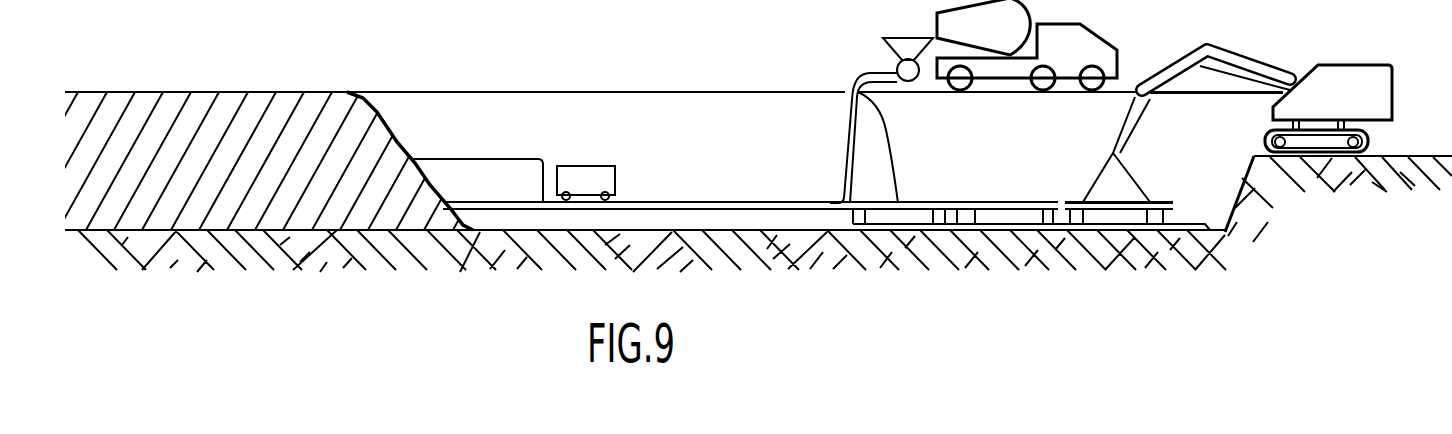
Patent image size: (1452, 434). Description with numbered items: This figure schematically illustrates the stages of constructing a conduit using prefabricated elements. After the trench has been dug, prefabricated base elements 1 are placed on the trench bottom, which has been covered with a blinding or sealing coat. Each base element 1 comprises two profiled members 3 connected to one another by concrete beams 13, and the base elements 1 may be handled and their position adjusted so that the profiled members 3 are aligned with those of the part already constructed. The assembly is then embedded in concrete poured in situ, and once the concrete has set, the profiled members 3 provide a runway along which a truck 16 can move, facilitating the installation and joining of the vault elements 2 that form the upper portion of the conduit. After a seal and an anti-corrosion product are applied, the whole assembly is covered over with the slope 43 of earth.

The slope 43 is at (370, 150).
The vault elements 2 is at (500, 167).
The truck 16 is at (577, 183).
The profiled members 3 is at (672, 207).
The concrete beams 13 is at (965, 218).
The prefabricated base elements 1 is at (1032, 192).